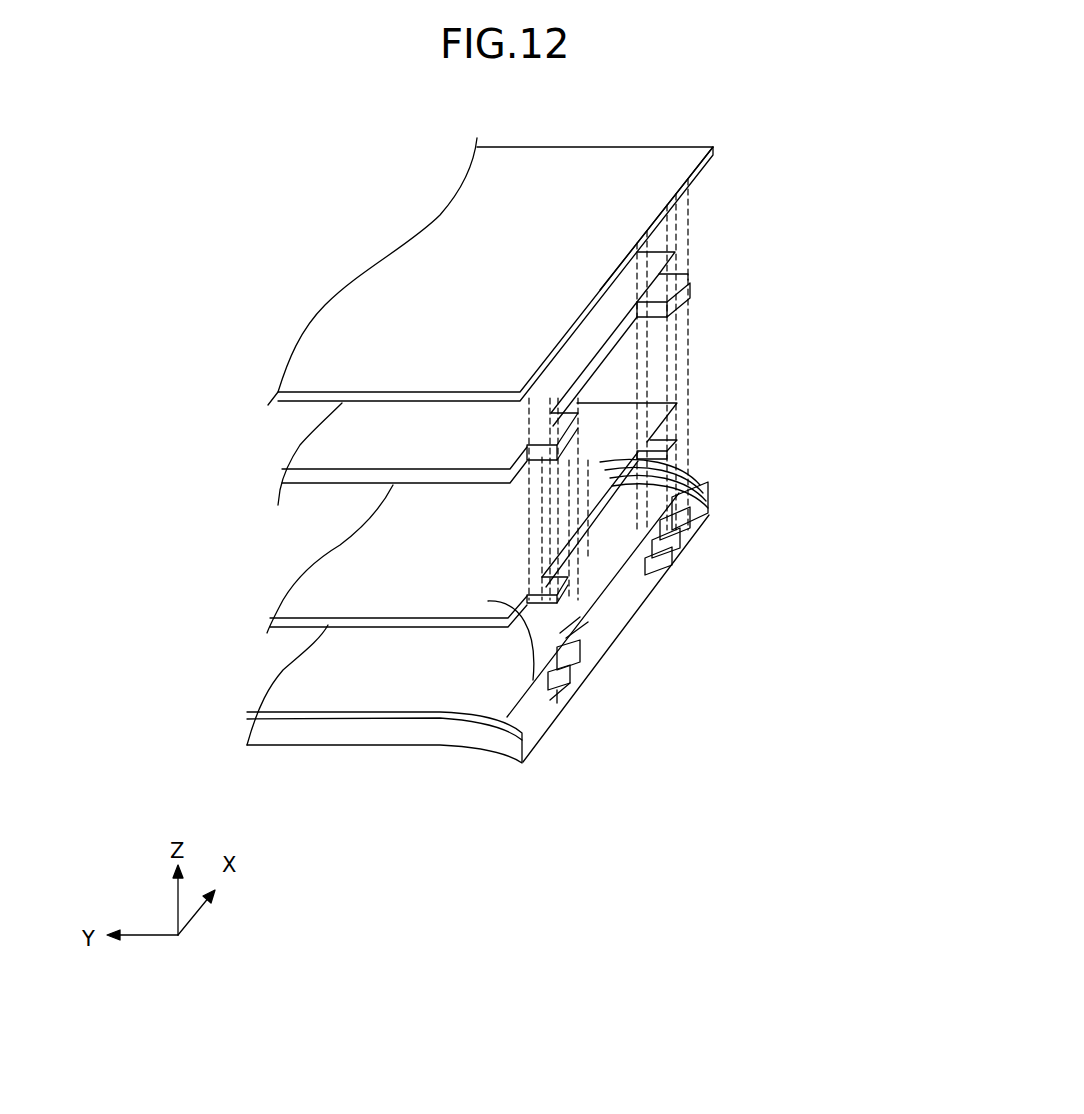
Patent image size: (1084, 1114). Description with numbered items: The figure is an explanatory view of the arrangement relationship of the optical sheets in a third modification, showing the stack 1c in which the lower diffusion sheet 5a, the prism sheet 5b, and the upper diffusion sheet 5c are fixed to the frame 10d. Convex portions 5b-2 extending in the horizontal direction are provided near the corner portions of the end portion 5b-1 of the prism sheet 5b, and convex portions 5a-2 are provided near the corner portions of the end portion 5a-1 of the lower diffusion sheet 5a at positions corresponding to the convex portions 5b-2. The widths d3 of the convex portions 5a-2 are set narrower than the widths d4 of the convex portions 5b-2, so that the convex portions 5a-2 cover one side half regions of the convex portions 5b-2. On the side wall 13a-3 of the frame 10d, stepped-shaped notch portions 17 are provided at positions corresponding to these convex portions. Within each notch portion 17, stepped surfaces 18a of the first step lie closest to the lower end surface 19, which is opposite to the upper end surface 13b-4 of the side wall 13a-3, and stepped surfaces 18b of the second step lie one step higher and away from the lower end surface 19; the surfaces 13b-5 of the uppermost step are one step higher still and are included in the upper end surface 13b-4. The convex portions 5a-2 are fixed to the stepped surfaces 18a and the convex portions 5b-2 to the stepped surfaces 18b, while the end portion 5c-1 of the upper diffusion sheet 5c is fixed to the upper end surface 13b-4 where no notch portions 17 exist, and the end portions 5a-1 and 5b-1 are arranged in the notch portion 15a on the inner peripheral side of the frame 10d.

The battery unit 1c is at (708, 127).
The upper diffusion sheet 5c is at (337, 322).
The end portion of the upper diffusion sheet 5c-1 is at (637, 197).
The prism sheet 5b is at (337, 437).
The end portion of the prism sheet 5b-1 is at (623, 285).
The convex portions of the prism sheet 5b-2 is at (575, 427).
The lower diffusion sheet 5a is at (337, 569).
The end portion of the lower diffusion sheet 5a-1 is at (548, 726).
The convex portions of the lower diffusion sheet 5a-2 is at (665, 443).
The frame 10d is at (400, 735).
The side wall 13a-3 is at (640, 636).
The upper end surface 13b-4 is at (590, 618).
The surfaces of the uppermost step 13b-5 is at (710, 490).
The notch portion 15a is at (703, 482).
The stepped-shaped notch portions 17 is at (690, 537).
The stepped surfaces of the first step 18a is at (683, 548).
The stepped surfaces of the second step 18b is at (703, 520).
The lower end surface 19 is at (558, 700).
The width of the convex portions of the lower diffusion sheet d3 is at (543, 575).
The width of the convex portions of the prism sheet d4 is at (553, 417).